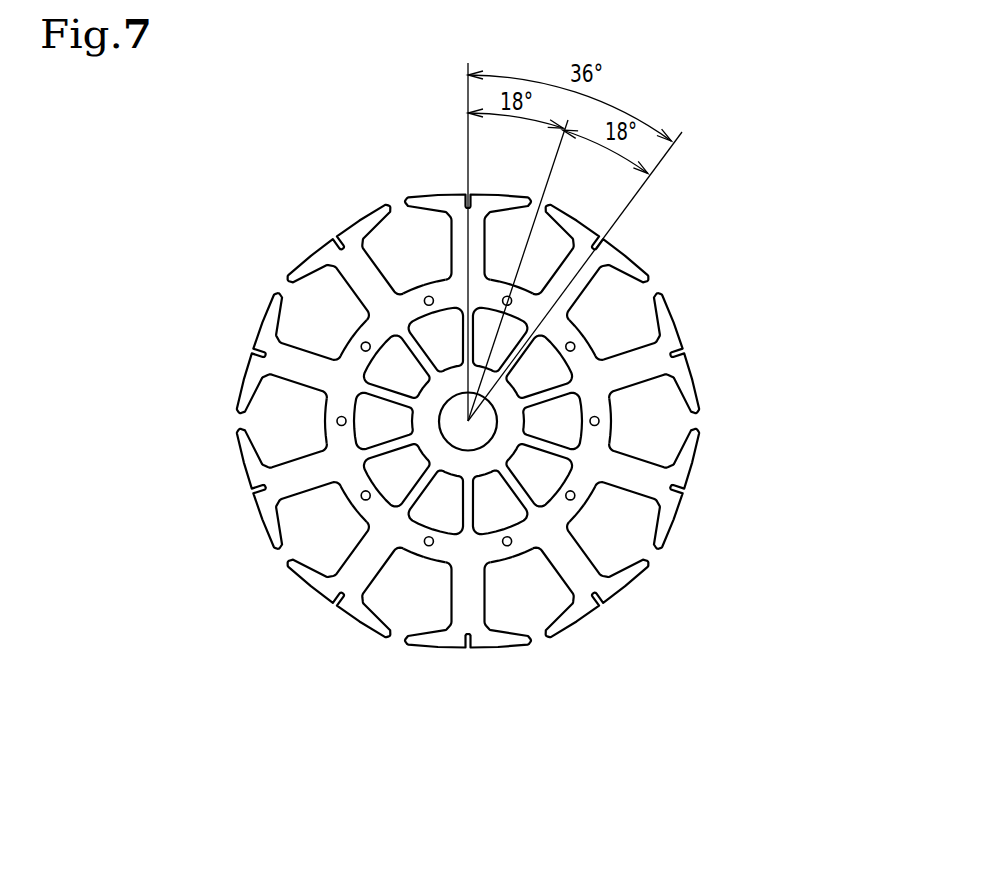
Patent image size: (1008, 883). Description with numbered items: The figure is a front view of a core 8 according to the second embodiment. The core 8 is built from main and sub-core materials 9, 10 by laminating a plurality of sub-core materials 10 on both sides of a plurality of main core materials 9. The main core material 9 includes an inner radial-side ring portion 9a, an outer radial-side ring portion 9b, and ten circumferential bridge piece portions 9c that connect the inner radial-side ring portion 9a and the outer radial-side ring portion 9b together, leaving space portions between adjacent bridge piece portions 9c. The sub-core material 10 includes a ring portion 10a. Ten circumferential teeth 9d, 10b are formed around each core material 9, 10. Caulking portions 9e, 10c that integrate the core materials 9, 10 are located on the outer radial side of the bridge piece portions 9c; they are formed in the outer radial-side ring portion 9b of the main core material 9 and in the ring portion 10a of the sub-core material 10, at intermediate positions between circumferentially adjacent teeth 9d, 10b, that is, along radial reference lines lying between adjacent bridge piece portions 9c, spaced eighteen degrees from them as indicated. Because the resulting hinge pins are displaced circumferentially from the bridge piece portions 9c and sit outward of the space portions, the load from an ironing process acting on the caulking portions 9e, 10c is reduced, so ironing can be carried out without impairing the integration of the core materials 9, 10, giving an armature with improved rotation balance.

The core 8 is at (705, 237).
The sub-core material 10 is at (459, 472).
The main core material 9 is at (700, 317).
The teeth 10b is at (517, 446).
The teeth 9d is at (690, 390).
The ring portion 10a is at (602, 421).
The outer radial-side ring portion 9b is at (598, 407).
The caulking portions 10c is at (308, 522).
The caulking portions 9e is at (336, 421).
The inner radial-side ring portion 9a is at (503, 448).
The bridge piece portions 9c is at (387, 393).